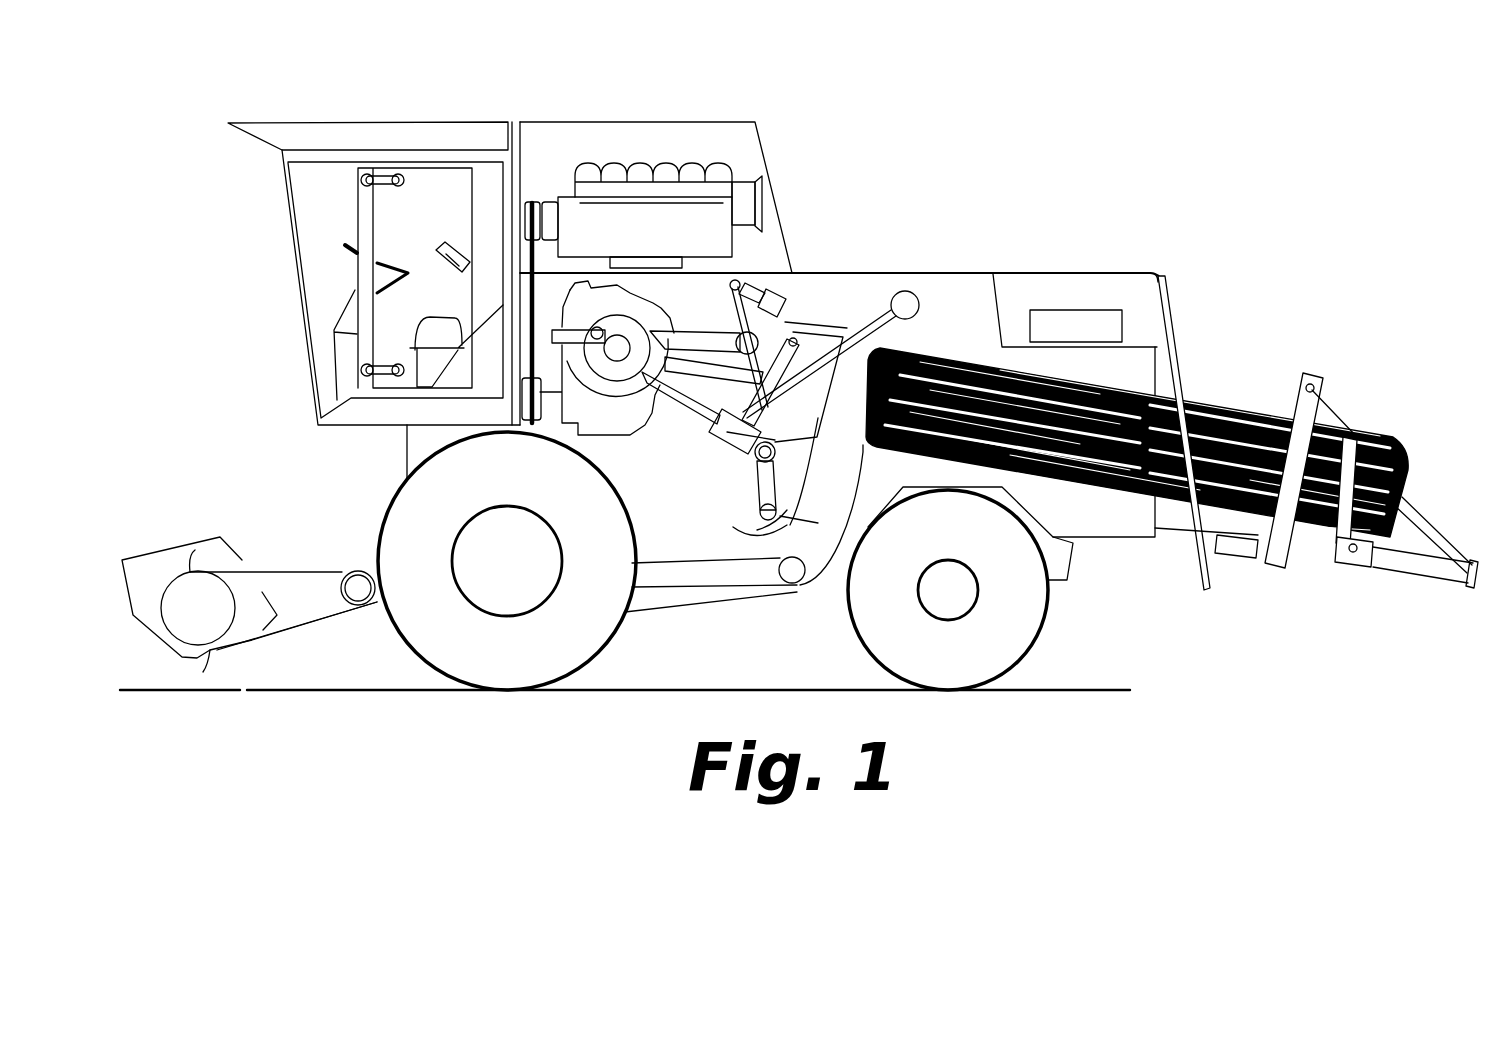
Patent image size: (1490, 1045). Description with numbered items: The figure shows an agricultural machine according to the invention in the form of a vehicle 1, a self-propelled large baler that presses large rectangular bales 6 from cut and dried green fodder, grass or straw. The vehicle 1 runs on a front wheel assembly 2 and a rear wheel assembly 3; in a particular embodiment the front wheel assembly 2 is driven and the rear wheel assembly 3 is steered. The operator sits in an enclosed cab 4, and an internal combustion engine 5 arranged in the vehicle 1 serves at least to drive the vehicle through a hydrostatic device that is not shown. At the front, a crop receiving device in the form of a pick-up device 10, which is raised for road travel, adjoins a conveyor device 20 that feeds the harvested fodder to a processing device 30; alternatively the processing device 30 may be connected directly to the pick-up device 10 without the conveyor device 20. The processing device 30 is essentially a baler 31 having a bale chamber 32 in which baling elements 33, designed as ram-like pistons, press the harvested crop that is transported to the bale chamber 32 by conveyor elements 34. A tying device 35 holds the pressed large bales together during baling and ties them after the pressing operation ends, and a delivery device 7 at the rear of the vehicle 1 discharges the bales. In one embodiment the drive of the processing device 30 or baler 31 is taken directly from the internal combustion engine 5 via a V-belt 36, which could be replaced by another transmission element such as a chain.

The vehicle 1 is at (1046, 108).
The front wheel assembly 2 is at (405, 655).
The rear wheel assembly 3 is at (1041, 627).
The cab 4 is at (408, 122).
The internal combustion engine 5 is at (650, 245).
The large rectangular bales 6 is at (948, 355).
The delivery device 7 is at (1316, 598).
The pick-up device 10 is at (261, 516).
The conveyor device 20 is at (702, 626).
The processing device 30 is at (676, 435).
The baler 31 is at (718, 456).
The bale chamber 32 is at (855, 387).
The baling elements 33 is at (817, 350).
The conveyor elements 34 is at (742, 533).
The tying device 35 is at (915, 296).
The V-belt 36 is at (533, 200).